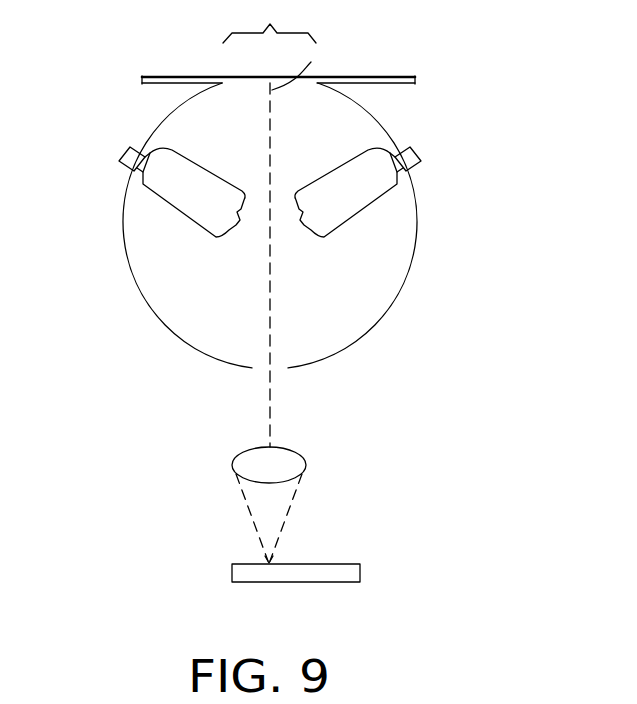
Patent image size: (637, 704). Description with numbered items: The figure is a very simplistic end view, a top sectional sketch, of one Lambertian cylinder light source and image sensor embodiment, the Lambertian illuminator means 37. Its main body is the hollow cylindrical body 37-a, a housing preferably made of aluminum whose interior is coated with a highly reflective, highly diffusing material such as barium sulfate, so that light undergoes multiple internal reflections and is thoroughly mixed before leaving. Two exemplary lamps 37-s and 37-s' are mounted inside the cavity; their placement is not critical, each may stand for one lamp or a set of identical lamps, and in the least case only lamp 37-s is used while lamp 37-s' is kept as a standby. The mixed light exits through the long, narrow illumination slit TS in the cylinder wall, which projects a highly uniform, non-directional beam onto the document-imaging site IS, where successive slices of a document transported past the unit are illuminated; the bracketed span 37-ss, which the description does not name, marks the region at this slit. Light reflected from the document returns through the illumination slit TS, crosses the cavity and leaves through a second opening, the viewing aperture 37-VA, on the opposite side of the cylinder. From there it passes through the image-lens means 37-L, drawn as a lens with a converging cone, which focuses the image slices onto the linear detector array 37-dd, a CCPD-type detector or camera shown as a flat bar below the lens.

The Lambertian illuminator means 37 is at (293, 265).
The hollow cylindrical body 37-a is at (391, 304).
The lamp 37-s is at (145, 192).
The second lamp 37-s' is at (412, 192).
The sensed surface span 37-ss is at (269, 21).
The viewing aperture 37-VA is at (268, 369).
The image-lens means 37-L is at (297, 492).
The detector array 37-dd is at (360, 573).
The illumination slit TS is at (223, 84).
The document-imaging site IS is at (311, 62).